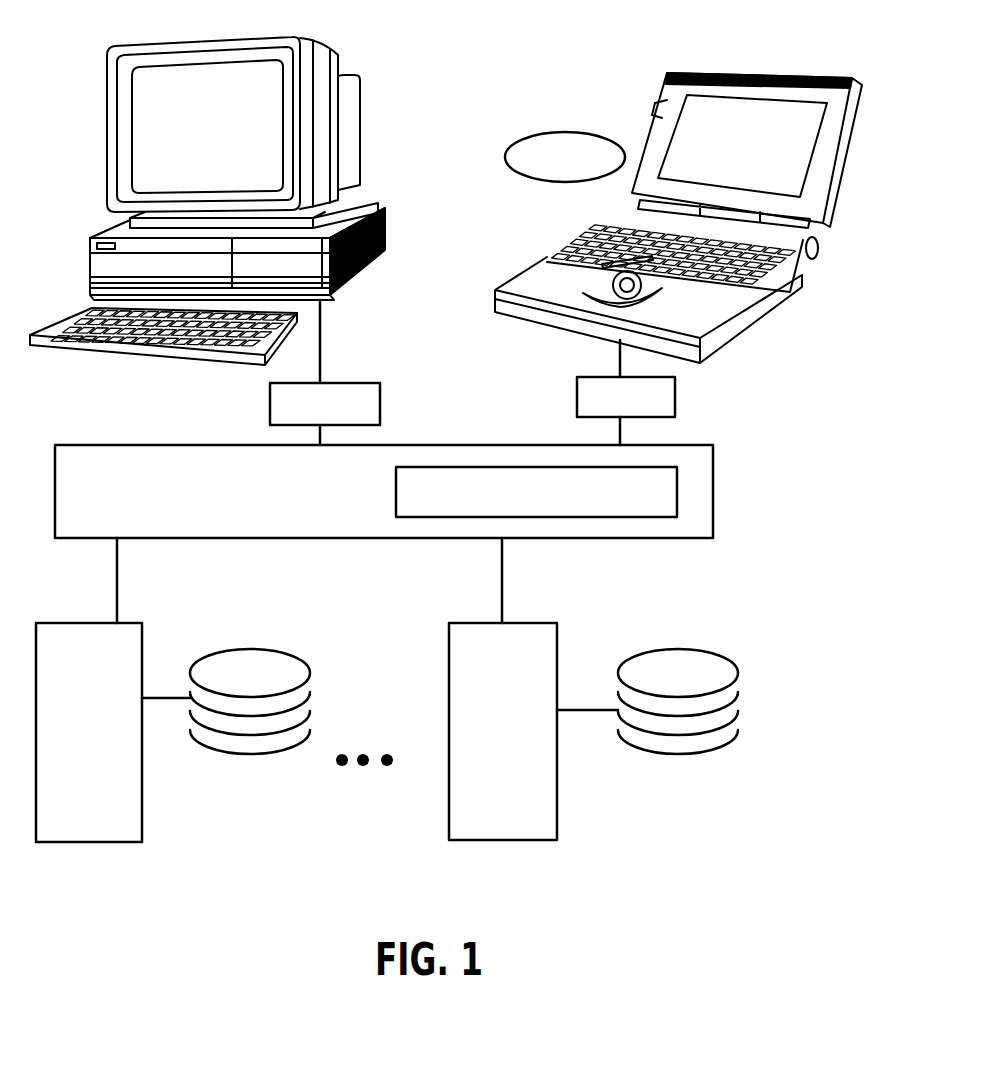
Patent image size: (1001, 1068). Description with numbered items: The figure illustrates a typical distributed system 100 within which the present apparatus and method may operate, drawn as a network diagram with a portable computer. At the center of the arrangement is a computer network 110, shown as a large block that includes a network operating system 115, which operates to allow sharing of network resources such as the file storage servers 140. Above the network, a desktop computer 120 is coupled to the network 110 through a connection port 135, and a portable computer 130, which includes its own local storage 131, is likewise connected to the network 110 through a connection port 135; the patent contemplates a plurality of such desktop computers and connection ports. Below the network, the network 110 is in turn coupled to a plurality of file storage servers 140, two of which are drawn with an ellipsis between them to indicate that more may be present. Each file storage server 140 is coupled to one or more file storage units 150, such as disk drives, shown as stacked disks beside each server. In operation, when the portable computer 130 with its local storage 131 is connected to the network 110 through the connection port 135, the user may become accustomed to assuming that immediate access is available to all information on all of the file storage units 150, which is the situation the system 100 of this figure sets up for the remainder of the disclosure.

The distributed system 100 is at (766, 834).
The computer network 110 is at (713, 498).
The network operating system 115 is at (628, 517).
The desktop computer 120 is at (385, 222).
The portable computer 130 is at (818, 252).
The local storage 131 is at (575, 243).
The connection port 135 is at (270, 406).
The file storage server 140 is at (142, 804).
The file storage unit 150 is at (310, 688).